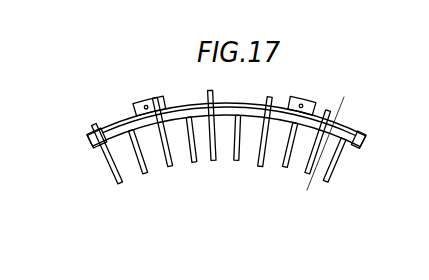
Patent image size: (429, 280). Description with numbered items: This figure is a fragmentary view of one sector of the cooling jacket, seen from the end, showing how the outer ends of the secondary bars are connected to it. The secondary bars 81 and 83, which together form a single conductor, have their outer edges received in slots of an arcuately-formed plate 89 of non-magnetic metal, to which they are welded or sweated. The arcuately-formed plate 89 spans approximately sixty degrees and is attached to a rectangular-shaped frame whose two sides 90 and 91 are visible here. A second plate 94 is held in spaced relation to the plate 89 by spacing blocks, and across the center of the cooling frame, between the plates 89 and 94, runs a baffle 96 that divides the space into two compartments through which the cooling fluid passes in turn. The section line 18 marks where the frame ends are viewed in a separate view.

The section line for Figure 18 is at (344, 96).
The bar 81 is at (332, 186).
The bar 83 is at (258, 164).
The arcuately-formed plate 89 is at (362, 151).
The frame side 90 is at (369, 145).
The frame side 91 is at (83, 147).
The plate 94 is at (352, 123).
The baffle 96 is at (238, 106).